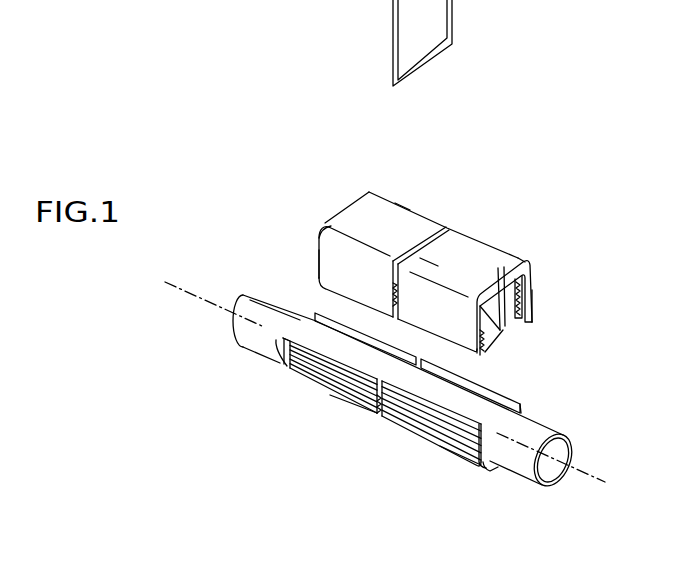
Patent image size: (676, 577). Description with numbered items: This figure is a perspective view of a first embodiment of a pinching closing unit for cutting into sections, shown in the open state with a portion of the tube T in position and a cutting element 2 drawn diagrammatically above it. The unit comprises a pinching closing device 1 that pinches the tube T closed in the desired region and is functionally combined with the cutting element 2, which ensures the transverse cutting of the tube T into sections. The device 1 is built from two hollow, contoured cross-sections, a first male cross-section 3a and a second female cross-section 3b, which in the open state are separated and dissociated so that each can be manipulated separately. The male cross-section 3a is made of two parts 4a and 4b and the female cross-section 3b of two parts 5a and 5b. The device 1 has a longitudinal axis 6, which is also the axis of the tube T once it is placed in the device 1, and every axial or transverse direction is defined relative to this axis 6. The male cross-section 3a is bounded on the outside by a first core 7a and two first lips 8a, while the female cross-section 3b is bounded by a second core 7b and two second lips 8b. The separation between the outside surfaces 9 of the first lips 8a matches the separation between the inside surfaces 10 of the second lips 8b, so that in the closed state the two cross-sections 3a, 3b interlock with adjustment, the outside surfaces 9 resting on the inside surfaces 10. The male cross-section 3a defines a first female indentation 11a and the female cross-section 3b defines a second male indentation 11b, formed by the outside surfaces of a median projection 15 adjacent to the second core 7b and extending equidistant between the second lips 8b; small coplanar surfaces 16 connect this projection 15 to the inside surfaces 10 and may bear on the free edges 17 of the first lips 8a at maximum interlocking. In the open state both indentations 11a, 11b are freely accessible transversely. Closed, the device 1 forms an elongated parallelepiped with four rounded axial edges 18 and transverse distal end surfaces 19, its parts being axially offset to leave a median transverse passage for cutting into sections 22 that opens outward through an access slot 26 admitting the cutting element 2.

The pinching closing device for cutting into sections 1 is at (407, 168).
The cutting element 2 is at (456, 45).
The first male cross-section 3a is at (427, 460).
The second female cross-section 3b is at (484, 208).
The first part of the male cross-section 4a is at (288, 370).
The second part of the male cross-section 4b is at (408, 437).
The first part of the female cross-section 5a is at (377, 208).
The second part of the female cross-section 5b is at (503, 258).
The longitudinal axis 6 is at (590, 476).
The first core 7a is at (490, 473).
The second core 7b is at (408, 218).
The first lips 8a is at (355, 405).
The second lips 8b is at (328, 265).
The outside surfaces 9 is at (380, 420).
The inside surfaces 10 is at (521, 323).
The first female indentation 11a is at (479, 388).
The second male indentation 11b is at (528, 259).
The projection 15 is at (505, 297).
The small coplanar surfaces 16 is at (484, 272).
The free edges 17 is at (278, 378).
The rounded edges 18 is at (332, 221).
The transverse distal end surface 19 is at (337, 229).
The passage for cutting into sections 22 is at (441, 243).
The access slot 26 is at (429, 262).
The tube T is at (249, 358).